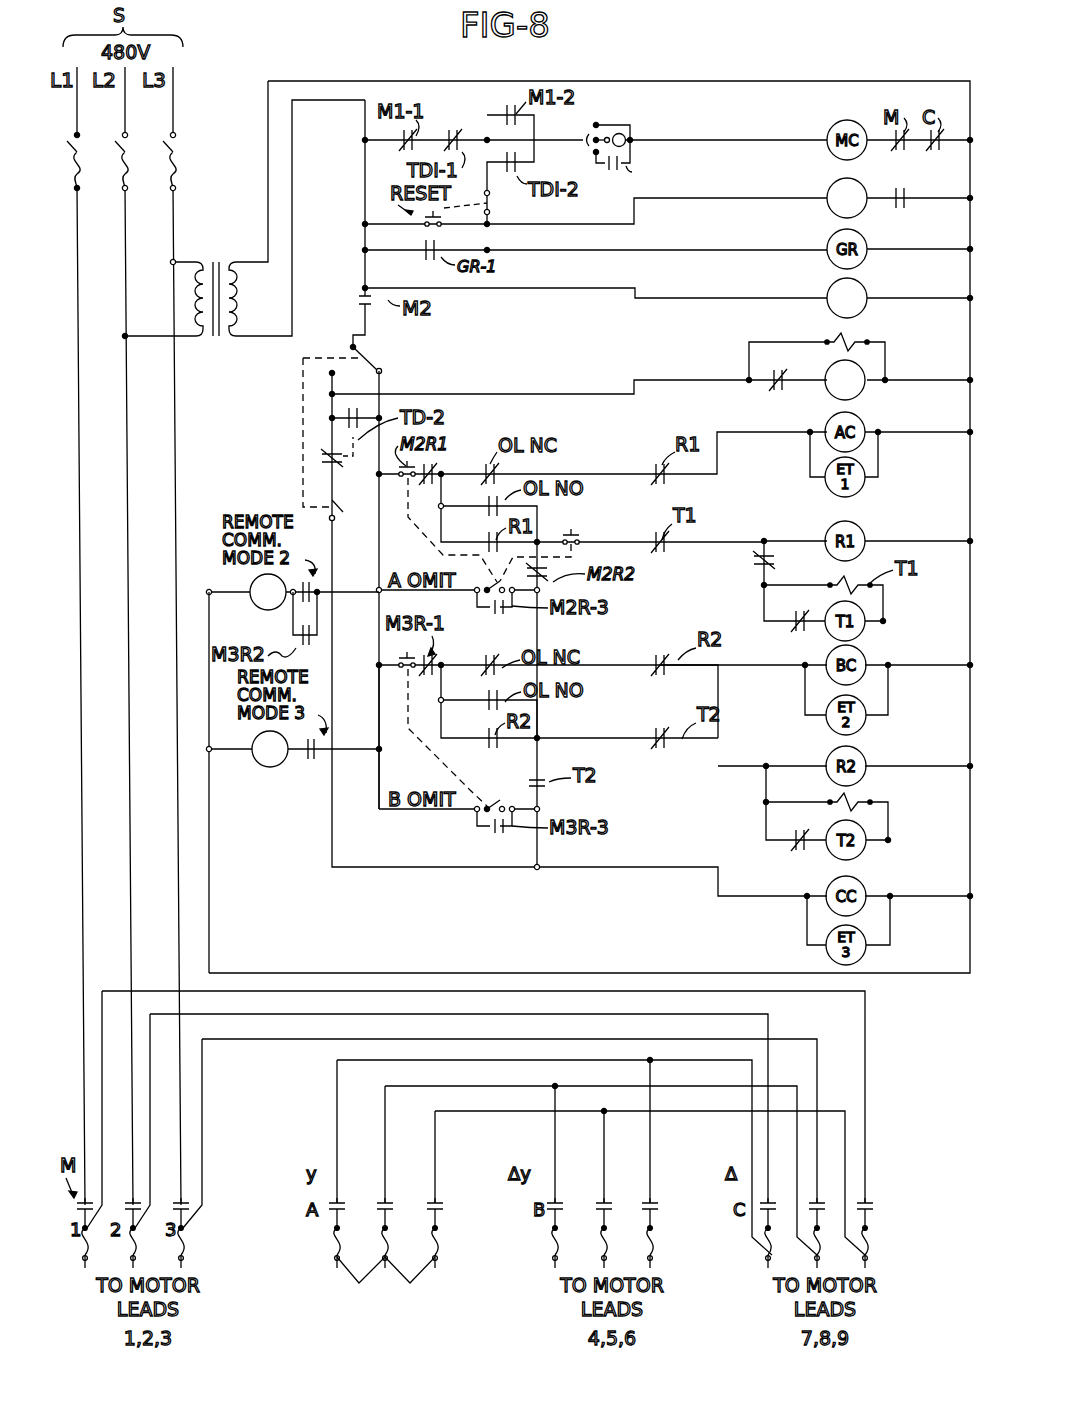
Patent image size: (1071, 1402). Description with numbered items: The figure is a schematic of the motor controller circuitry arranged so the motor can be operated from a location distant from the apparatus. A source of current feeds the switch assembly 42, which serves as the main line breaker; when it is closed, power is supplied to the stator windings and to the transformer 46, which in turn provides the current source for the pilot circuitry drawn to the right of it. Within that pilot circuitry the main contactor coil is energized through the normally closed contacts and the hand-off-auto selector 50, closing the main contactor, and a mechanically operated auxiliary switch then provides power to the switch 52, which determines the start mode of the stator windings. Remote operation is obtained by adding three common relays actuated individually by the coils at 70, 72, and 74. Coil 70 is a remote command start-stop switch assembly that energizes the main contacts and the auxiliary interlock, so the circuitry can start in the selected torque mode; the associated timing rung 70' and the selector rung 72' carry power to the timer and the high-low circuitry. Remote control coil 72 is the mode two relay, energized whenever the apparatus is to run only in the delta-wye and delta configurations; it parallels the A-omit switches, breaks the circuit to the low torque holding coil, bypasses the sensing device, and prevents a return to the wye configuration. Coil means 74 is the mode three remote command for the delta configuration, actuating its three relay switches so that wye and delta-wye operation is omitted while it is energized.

The switch assembly 42 is at (186, 158).
The transformer 46 is at (221, 248).
The hand-off-auto selector switch 50 is at (638, 120).
The switch 52 is at (386, 361).
The coil 70 is at (825, 193).
The time delay relay circuit 70' is at (667, 304).
The remote control coil 72 is at (254, 608).
The timer circuit 72' is at (650, 359).
The coil means 74 is at (269, 768).